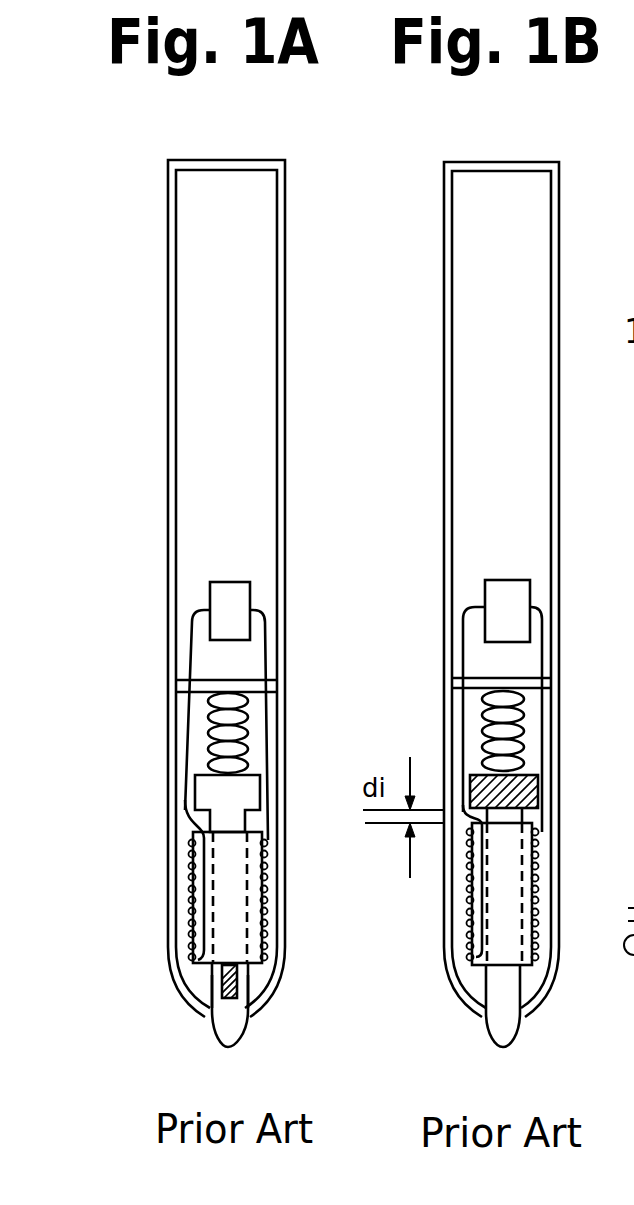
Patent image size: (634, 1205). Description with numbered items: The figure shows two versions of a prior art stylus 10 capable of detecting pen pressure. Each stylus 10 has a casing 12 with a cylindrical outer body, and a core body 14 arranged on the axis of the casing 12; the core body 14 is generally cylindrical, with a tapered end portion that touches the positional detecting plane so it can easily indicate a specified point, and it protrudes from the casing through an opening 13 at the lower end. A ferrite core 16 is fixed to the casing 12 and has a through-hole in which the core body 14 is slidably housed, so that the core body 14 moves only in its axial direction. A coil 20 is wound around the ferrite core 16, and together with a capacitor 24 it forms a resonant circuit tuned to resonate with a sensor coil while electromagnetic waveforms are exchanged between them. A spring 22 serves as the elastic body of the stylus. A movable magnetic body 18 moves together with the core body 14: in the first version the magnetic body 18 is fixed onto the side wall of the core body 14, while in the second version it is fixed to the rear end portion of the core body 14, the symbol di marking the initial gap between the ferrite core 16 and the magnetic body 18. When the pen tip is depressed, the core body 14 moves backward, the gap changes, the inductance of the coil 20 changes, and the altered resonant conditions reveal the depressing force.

In FIG. 1A, the stylus 10 is at (133, 251).
In FIG. 1A, the casing 12 is at (174, 372).
In FIG. 1B, the casing 12 is at (448, 362).
In FIG. 1A, the opening of casing 13 is at (249, 1020).
In FIG. 1A, the core body 14 is at (227, 1017).
In FIG. 1B, the core body 14 is at (492, 992).
In FIG. 1A, the ferrite core 16 is at (250, 893).
In FIG. 1B, the ferrite core 16 is at (517, 890).
In FIG. 1A, the movable magnetic body 18 is at (238, 973).
In FIG. 1B, the movable magnetic body 18 is at (533, 787).
In FIG. 1A, the coil 20 is at (265, 845).
In FIG. 1B, the coil 20 is at (537, 845).
In FIG. 1A, the spring 22 is at (246, 725).
In FIG. 1B, the spring 22 is at (525, 713).
In FIG. 1A, the capacitor 24 is at (248, 610).
In FIG. 1B, the capacitor 24 is at (531, 592).